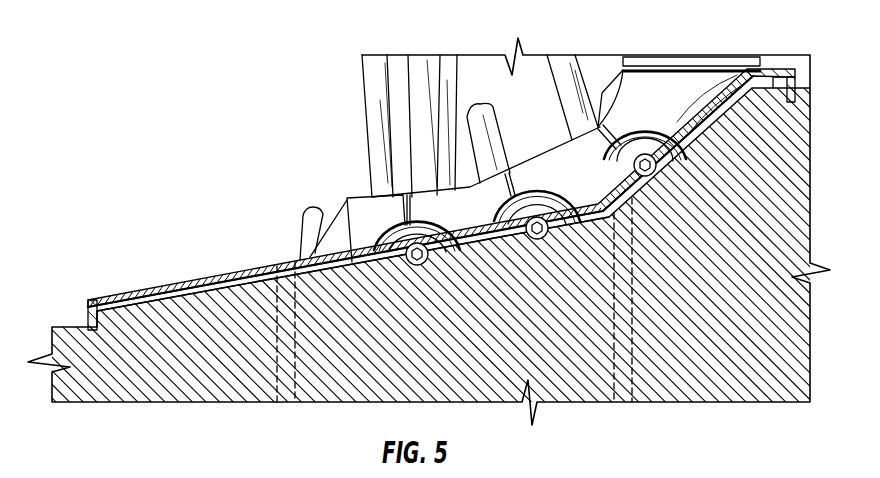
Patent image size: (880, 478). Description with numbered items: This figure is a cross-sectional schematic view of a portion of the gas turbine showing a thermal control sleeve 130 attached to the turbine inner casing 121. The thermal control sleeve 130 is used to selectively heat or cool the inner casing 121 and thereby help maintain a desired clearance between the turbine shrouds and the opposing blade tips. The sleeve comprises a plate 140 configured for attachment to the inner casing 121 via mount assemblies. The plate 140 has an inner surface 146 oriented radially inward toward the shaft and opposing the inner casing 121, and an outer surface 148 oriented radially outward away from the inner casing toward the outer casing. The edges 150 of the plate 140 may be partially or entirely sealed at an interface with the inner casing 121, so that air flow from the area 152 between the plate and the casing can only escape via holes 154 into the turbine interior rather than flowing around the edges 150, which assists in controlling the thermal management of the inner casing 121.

The turbine inner casing 121 is at (508, 322).
The thermal control sleeve 130 is at (184, 270).
The plate 140 is at (147, 286).
The inner surface 146 is at (362, 208).
The outer surface 148 is at (343, 207).
The edge 150 is at (88, 297).
The area 152 is at (205, 288).
The hole 154 is at (297, 345).